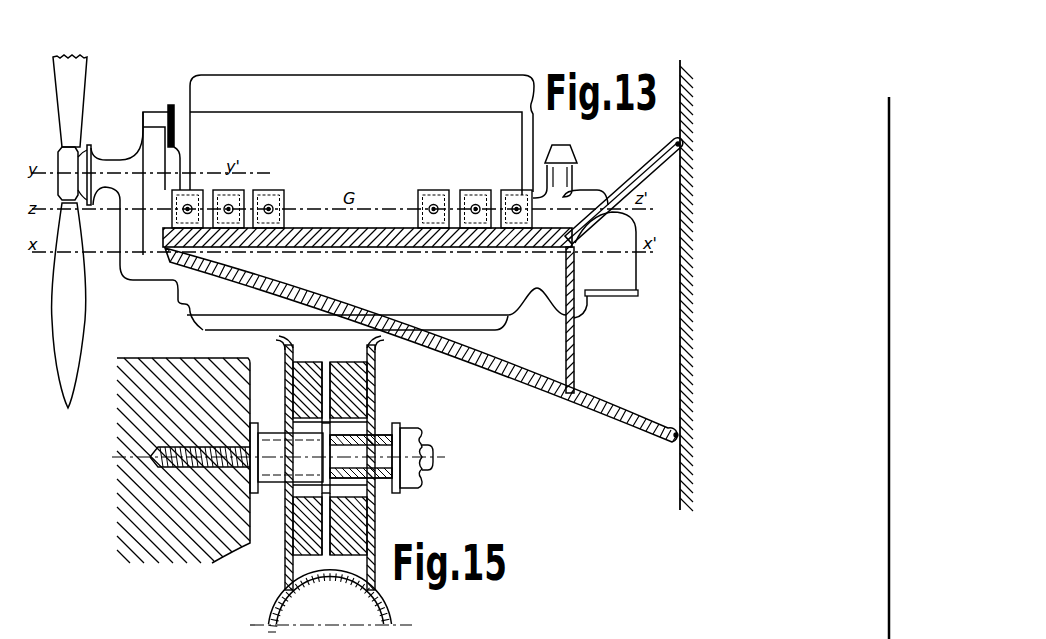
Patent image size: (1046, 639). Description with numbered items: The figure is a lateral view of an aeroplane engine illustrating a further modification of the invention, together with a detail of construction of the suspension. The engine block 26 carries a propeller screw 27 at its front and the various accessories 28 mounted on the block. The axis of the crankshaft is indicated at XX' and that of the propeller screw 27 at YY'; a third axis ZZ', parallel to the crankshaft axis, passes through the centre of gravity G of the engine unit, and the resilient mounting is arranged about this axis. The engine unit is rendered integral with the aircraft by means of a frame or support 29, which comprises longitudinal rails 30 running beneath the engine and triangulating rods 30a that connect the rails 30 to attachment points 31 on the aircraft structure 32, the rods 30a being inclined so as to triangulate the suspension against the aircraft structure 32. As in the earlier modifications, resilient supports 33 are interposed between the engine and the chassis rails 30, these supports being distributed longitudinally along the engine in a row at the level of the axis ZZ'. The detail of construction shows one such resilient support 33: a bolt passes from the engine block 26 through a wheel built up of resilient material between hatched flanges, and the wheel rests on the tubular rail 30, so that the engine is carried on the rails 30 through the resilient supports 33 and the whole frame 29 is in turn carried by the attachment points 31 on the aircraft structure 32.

In FIG. 13, the engine block 26 is at (405, 80).
In FIG. 15, the engine block 26 is at (244, 545).
In FIG. 13, the propeller screw 27 is at (75, 310).
In FIG. 13, the accessories 28 is at (611, 268).
In FIG. 13, the frame or support 29 is at (578, 345).
In FIG. 13, the longitudinal rails 30 is at (402, 240).
In FIG. 15, the longitudinal rails 30 is at (390, 619).
In FIG. 13, the triangulating rods 30a is at (633, 180).
In FIG. 13, the attachment points 31 is at (677, 143).
In FIG. 13, the aircraft structure 32 is at (690, 230).
In FIG. 15, the resilient supports 33 is at (356, 415).